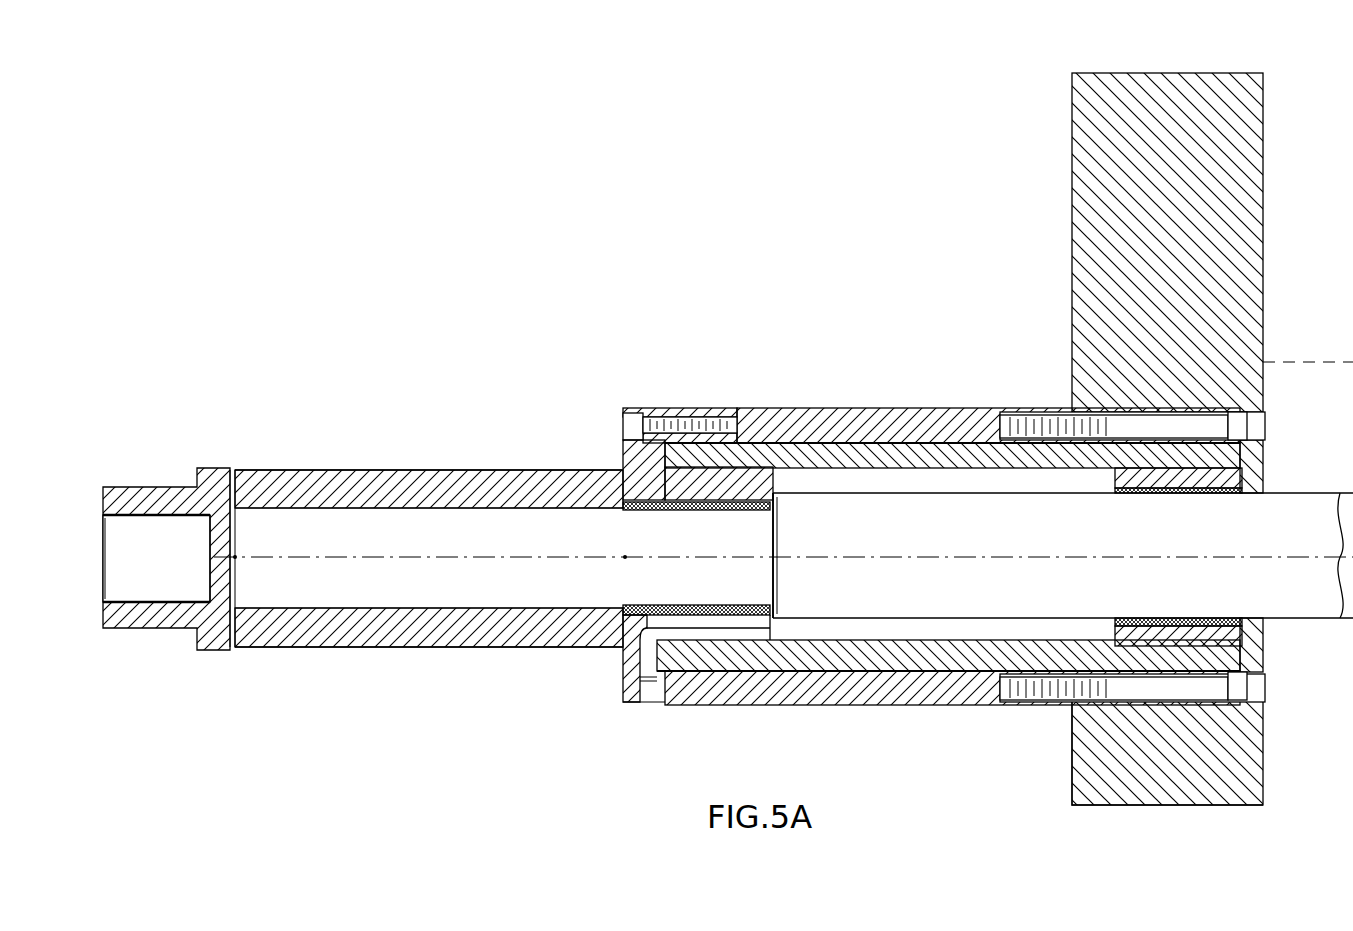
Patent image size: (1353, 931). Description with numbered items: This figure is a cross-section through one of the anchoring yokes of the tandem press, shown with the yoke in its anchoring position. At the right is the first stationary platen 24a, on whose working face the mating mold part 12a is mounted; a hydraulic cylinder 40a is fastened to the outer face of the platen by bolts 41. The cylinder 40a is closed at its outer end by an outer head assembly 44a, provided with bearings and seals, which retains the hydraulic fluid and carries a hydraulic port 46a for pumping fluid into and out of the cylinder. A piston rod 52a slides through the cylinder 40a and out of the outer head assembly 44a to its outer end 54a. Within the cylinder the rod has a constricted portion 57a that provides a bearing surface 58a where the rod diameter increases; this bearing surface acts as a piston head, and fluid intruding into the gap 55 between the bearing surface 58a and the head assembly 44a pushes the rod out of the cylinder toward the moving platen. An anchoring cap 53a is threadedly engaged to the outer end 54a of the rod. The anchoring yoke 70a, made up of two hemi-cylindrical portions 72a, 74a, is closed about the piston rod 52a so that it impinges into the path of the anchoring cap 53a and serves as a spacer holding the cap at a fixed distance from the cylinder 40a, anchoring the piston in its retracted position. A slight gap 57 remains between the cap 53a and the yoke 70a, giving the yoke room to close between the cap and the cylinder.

The mating mold part 12a is at (1340, 256).
The first stationary platen 24a is at (1258, 806).
The hydraulic cylinder 40a is at (903, 440).
The bolts 41 is at (1195, 410).
The outer head assembly 44a is at (623, 447).
The hydraulic port 46a is at (645, 704).
The piston rod 52a is at (1030, 534).
The anchoring cap 53a is at (168, 487).
The outer end 54a is at (212, 578).
The gap 55 is at (767, 440).
The gap 57 is at (233, 650).
The constricted portion 57a is at (483, 597).
The bearing surface 58a is at (770, 580).
The anchoring yoke 70a is at (290, 460).
The hemi-cylindrical portion 72a is at (447, 470).
The hemi-cylindrical portion 74a is at (357, 645).